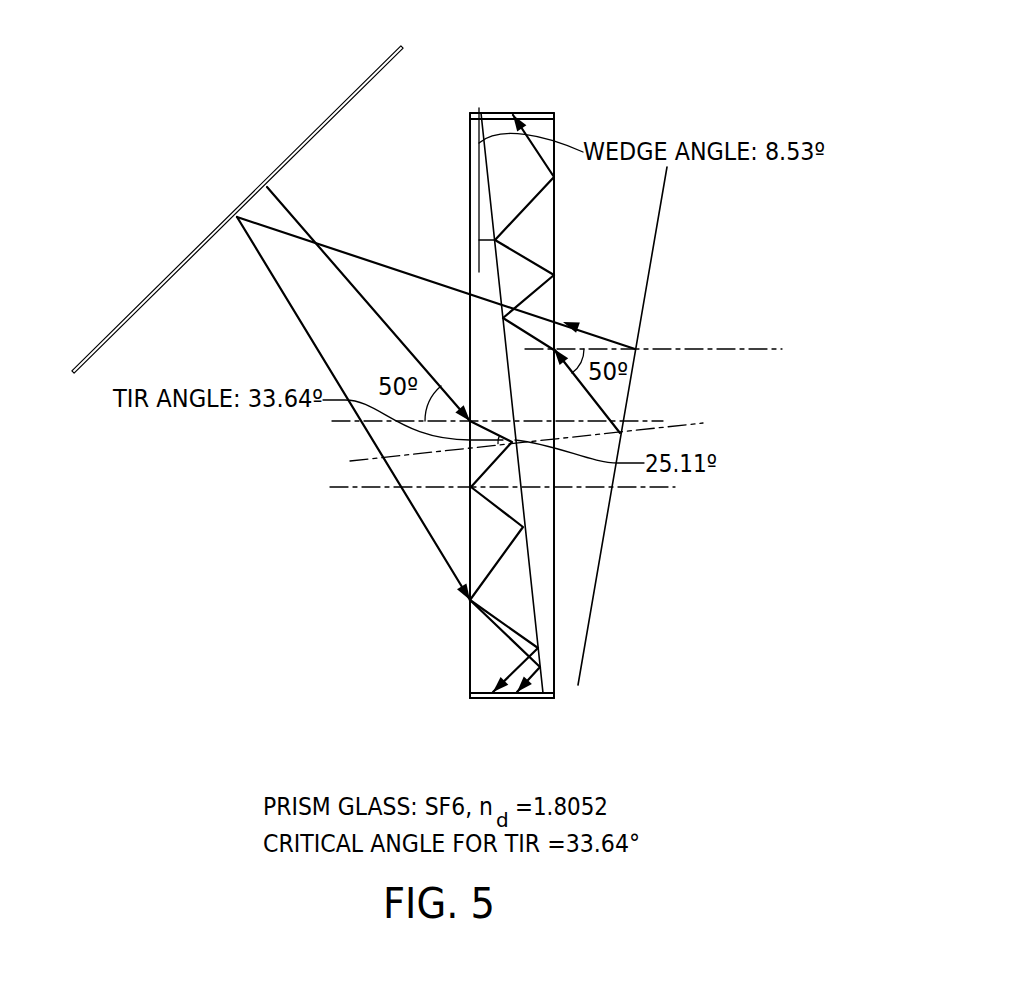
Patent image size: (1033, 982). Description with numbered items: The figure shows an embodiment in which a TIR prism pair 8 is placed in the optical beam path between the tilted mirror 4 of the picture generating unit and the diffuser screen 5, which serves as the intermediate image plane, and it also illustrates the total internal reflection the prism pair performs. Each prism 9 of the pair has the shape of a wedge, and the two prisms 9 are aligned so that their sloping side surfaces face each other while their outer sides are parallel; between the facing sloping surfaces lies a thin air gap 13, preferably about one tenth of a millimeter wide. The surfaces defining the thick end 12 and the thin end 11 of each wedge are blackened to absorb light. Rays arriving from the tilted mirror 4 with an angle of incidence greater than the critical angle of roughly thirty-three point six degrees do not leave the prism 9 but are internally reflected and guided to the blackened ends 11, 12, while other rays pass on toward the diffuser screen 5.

The tilted mirror 4 is at (207, 233).
The diffuser screen 5 is at (643, 303).
The TIR prism pair 8 is at (540, 100).
The prism 9 is at (548, 232).
The thin end 11 is at (475, 112).
The thick end 12 is at (512, 700).
The air gap 13 is at (533, 598).